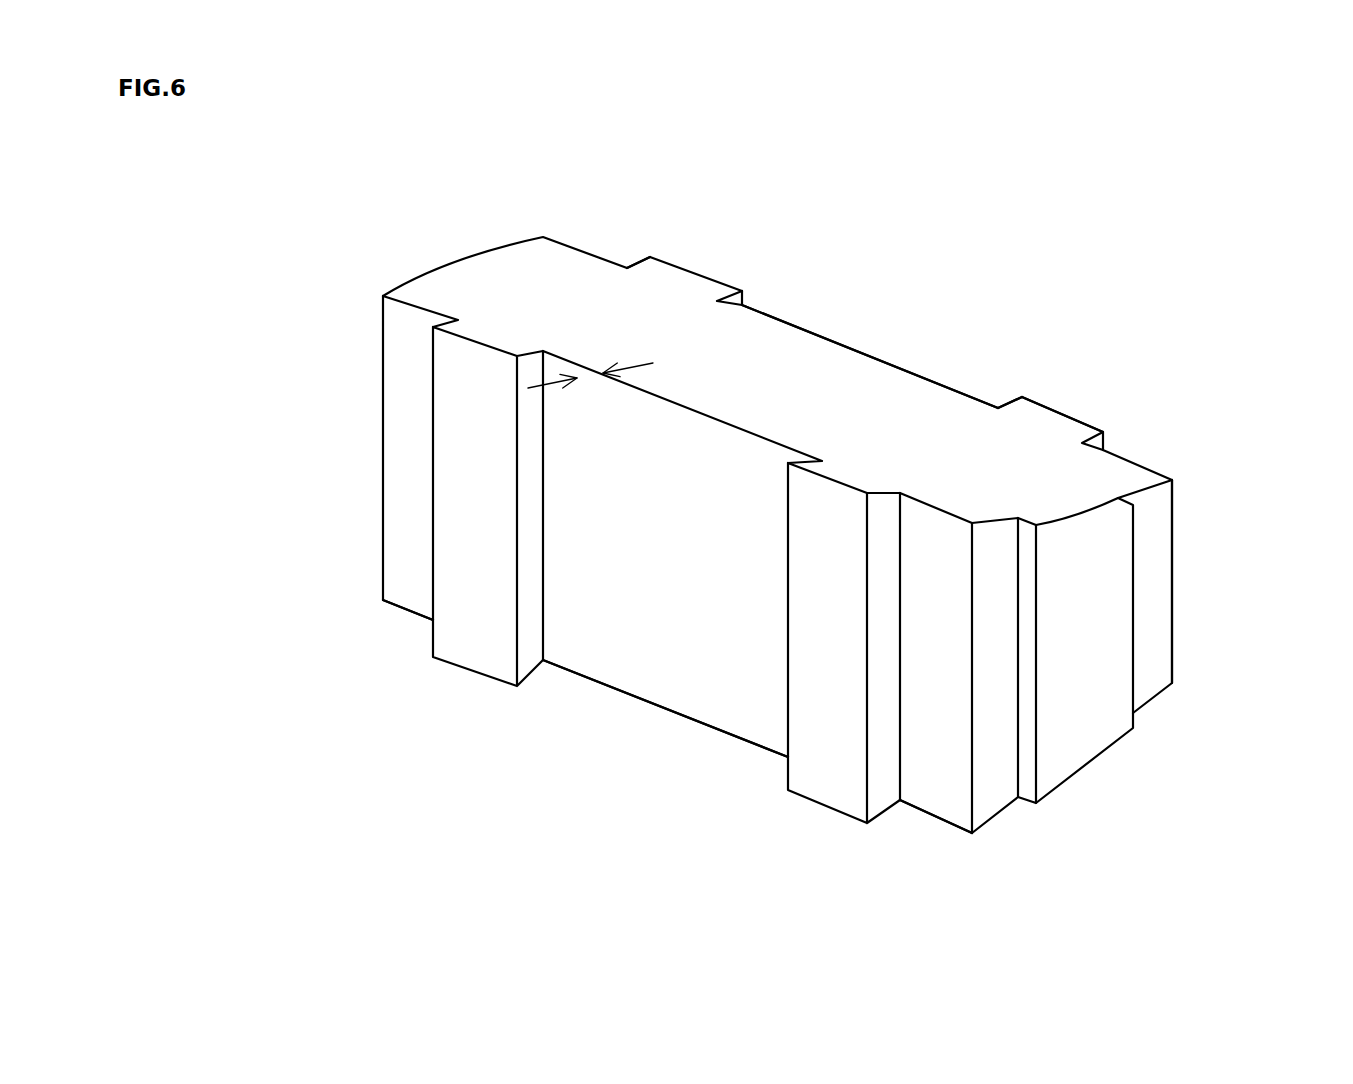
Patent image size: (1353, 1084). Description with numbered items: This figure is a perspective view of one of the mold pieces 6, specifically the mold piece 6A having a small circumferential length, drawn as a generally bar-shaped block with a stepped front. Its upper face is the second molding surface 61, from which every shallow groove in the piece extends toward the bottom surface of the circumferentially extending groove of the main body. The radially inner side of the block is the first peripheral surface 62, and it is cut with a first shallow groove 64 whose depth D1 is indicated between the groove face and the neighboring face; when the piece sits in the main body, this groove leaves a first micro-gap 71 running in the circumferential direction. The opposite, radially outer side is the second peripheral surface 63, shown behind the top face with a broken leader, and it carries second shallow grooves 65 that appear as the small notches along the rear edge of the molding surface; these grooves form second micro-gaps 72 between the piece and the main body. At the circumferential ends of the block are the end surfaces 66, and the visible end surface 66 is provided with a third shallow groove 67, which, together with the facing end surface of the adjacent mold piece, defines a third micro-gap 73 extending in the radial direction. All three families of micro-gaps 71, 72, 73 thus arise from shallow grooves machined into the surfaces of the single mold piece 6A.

The mold piece 6 is at (1113, 295).
The mold piece having a small circumferential length 6A is at (938, 249).
The second molding surface 61 is at (652, 328).
The first peripheral surface 62 is at (488, 607).
The second peripheral surface 63 is at (1042, 435).
The first shallow groove 64 is at (405, 557).
The second shallow groove 65 is at (588, 243).
The circumferential end surface 66 is at (1105, 692).
The third shallow groove 67 is at (1160, 513).
The first micro-gap 71 is at (410, 585).
The second micro-gap 72 is at (827, 328).
The third micro-gap 73 is at (1160, 596).
The depth of the first shallow groove D1 is at (598, 378).